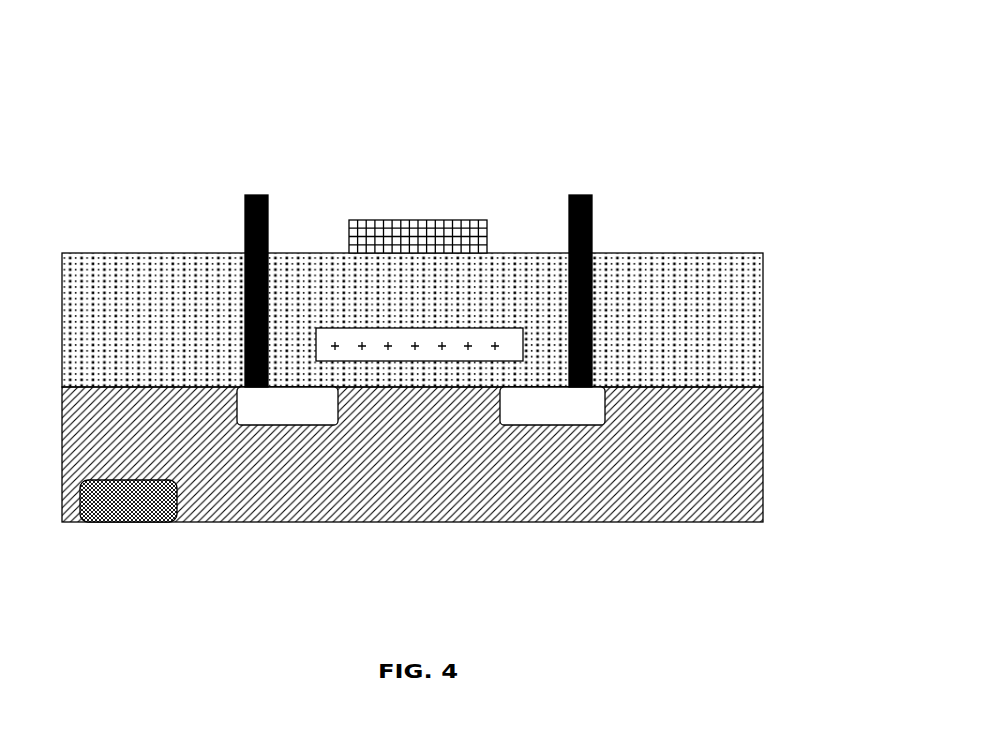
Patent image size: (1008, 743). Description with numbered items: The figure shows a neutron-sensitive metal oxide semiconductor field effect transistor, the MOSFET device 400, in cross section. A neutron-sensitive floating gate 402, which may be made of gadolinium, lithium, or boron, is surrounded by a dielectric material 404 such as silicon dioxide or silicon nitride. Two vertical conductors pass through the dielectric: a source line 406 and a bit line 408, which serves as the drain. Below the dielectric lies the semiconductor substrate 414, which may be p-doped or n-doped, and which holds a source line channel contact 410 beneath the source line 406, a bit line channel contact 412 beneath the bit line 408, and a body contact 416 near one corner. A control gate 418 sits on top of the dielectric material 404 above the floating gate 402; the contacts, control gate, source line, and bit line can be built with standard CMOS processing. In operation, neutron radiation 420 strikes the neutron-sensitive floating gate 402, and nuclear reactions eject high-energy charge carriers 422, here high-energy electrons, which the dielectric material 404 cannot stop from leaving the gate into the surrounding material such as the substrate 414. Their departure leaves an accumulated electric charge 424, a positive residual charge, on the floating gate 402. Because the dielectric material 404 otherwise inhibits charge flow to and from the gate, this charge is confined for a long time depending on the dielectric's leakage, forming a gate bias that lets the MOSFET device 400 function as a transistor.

The MOSFET device 400 is at (777, 102).
The neutron-sensitive floating gate 402 is at (368, 353).
The dielectric material 404 is at (743, 313).
The source line 406 is at (245, 223).
The bit line 408 is at (592, 192).
The source line channel contact 410 is at (287, 406).
The bit line channel contact 412 is at (552, 406).
The semiconductor substrate 414 is at (742, 448).
The body contact 416 is at (128, 523).
The control gate 418 is at (457, 220).
The neutron radiation 420 is at (435, 328).
The high-energy charge carriers 422 is at (422, 337).
The accumulated electric charge 424 is at (393, 347).